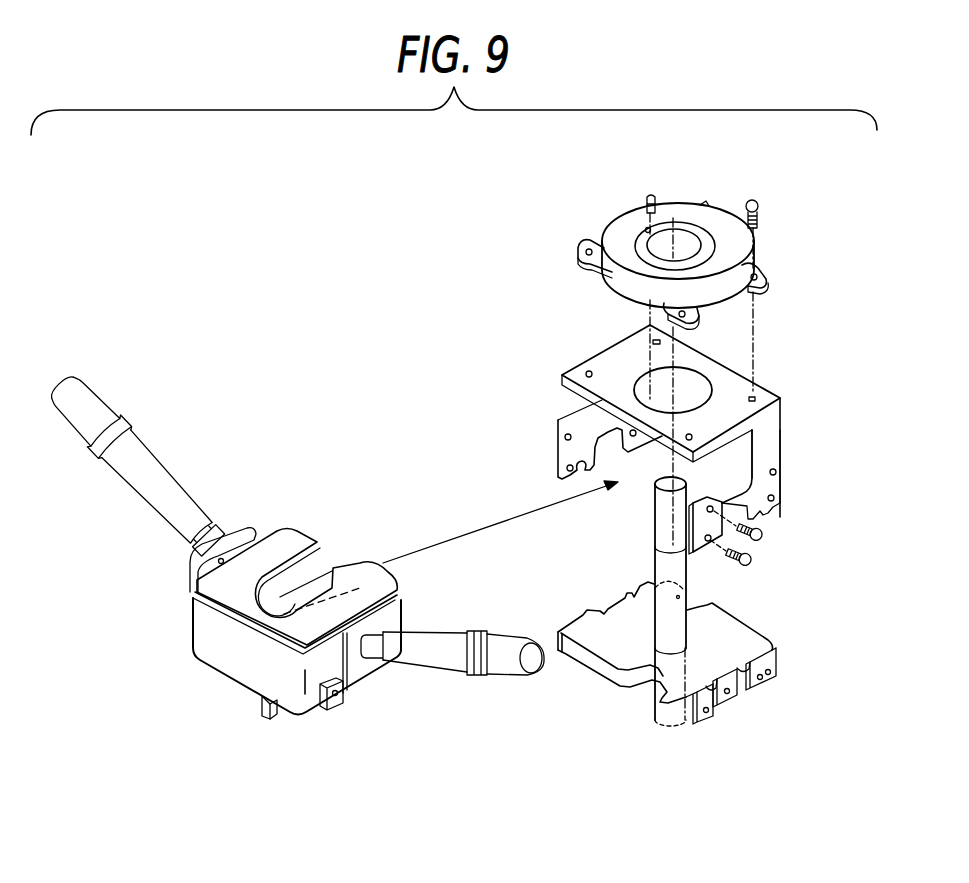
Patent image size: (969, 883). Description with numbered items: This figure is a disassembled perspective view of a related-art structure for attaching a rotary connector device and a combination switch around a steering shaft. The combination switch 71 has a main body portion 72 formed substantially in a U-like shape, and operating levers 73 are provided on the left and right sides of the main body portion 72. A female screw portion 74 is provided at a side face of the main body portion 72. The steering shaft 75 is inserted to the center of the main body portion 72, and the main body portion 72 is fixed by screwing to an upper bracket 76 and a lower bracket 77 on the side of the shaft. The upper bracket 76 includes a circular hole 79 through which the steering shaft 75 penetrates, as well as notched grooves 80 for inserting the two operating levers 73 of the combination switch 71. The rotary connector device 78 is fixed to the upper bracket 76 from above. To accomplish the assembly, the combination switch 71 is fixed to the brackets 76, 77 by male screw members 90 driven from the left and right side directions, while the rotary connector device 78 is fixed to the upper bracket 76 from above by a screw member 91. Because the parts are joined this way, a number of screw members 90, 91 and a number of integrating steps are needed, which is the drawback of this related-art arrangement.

The combination switch 71 is at (239, 687).
The main body portion 72 is at (310, 567).
The operating levers 73 is at (160, 460).
The female screw portion 74 is at (340, 708).
The steering shaft 75 is at (652, 553).
The upper bracket 76 is at (777, 390).
The lower bracket 77 is at (740, 622).
The rotary connector device 78 is at (752, 260).
The circular hole 79 is at (685, 380).
The notched grooves 80 is at (735, 462).
The male screw members 90 is at (765, 535).
The screw member 91 is at (760, 205).